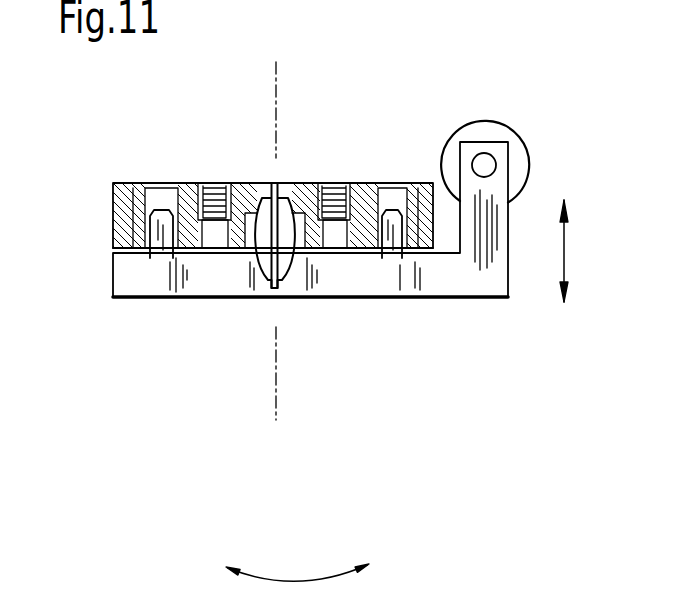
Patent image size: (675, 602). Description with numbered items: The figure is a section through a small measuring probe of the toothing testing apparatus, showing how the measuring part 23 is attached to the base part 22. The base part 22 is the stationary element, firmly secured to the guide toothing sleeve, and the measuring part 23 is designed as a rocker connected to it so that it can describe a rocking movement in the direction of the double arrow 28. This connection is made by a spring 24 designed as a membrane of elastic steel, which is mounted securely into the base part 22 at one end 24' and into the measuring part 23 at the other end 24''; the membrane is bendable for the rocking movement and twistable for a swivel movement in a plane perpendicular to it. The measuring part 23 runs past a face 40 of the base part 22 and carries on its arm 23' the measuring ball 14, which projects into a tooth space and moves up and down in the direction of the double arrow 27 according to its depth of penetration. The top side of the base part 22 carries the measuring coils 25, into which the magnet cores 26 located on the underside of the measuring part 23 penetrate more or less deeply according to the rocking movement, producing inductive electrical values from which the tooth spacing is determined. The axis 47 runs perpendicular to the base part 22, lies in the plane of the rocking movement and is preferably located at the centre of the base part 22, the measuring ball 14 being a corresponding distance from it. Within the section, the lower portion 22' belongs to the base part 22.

The measuring ball 14 is at (482, 133).
The base part 22 is at (273, 180).
The housing block lower portion 22' is at (273, 283).
The measuring part 23 is at (310, 251).
The arm of the measuring part 23' is at (515, 129).
The spring 24 is at (265, 285).
The end of the spring 24' is at (296, 203).
The other end of the spring 24'' is at (305, 341).
The measuring coil 25 is at (140, 235).
The magnet core 26 is at (155, 253).
The direction of movement of the measuring ball 27 is at (576, 251).
The arrows of the rocking movement 28 is at (297, 562).
The face of the base part 40 is at (200, 185).
The axis 47 is at (276, 244).